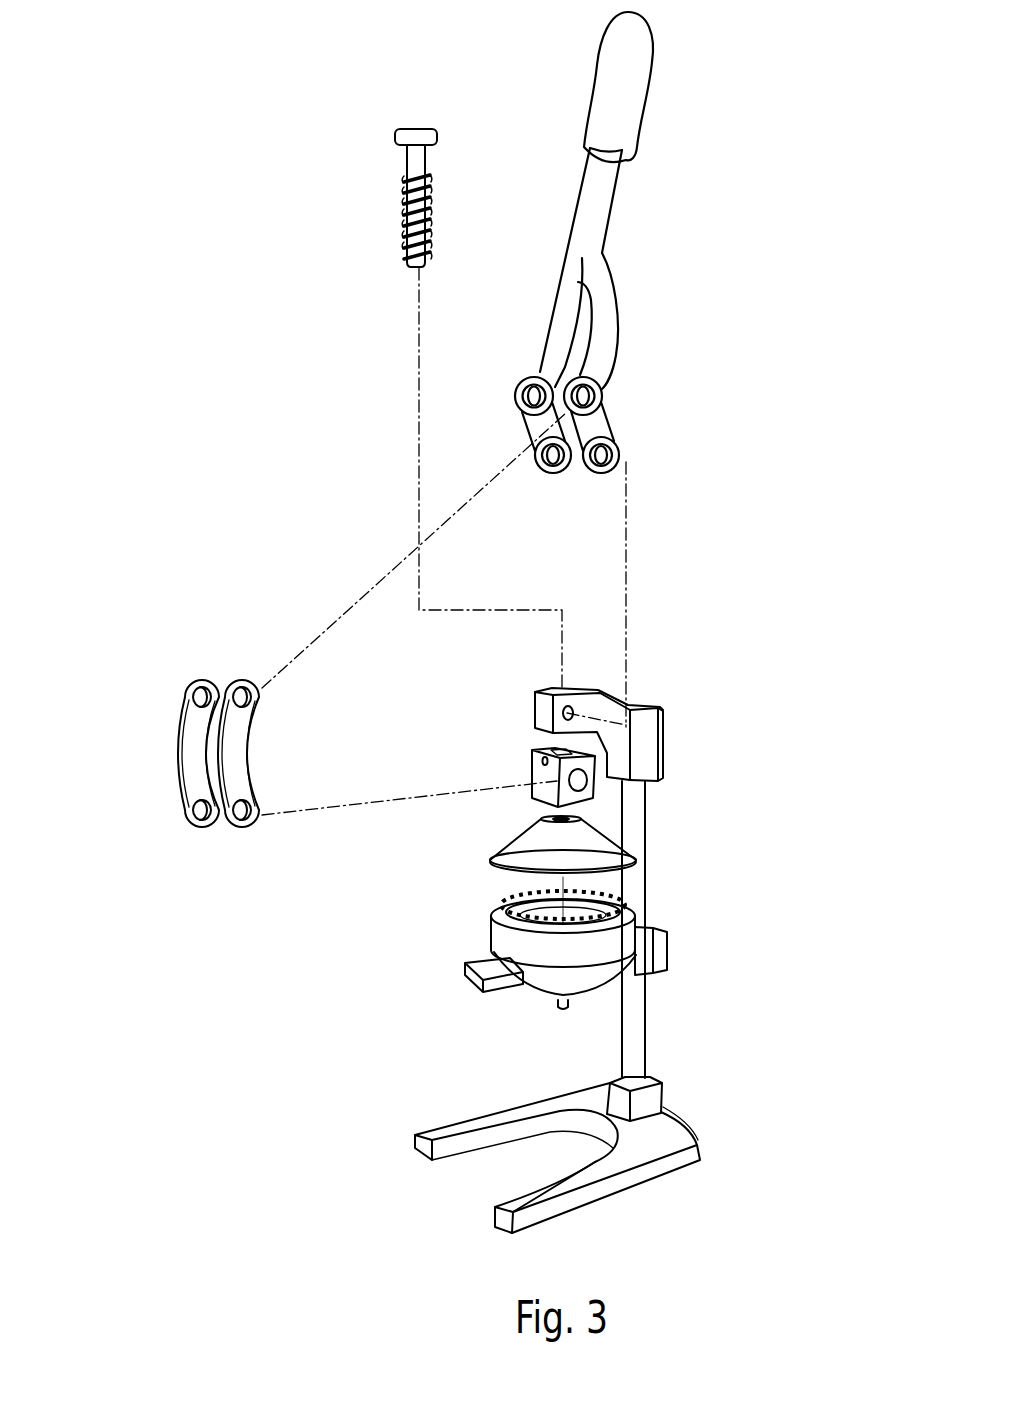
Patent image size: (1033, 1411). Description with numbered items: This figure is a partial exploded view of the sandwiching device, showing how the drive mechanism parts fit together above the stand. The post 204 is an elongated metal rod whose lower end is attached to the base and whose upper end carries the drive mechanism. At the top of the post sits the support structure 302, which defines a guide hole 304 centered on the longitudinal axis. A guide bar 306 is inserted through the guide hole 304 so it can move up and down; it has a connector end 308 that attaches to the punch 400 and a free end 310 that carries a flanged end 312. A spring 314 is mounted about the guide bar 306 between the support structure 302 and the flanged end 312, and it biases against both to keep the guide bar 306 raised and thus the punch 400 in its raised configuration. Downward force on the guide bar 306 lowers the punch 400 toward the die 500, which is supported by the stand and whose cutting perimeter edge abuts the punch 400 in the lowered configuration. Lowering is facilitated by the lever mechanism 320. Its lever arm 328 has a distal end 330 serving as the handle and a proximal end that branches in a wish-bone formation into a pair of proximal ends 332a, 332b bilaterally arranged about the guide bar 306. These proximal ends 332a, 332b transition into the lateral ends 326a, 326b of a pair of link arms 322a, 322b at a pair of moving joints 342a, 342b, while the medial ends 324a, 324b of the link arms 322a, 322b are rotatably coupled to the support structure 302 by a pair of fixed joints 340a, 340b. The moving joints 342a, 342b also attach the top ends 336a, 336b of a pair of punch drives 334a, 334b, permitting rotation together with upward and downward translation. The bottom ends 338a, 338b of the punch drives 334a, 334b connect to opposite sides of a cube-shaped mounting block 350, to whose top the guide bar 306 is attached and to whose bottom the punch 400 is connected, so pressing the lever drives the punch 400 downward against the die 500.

The free end 310 is at (362, 140).
The flanged end 312 is at (430, 134).
The guide bar 306 is at (405, 168).
The spring 314 is at (404, 218).
The connector end 308 is at (395, 278).
The distal end 330 is at (682, 93).
The lever mechanism 320 is at (627, 232).
The lever arm 328 is at (587, 218).
The proximal end 332a is at (633, 303).
The proximal end 332b is at (528, 360).
The lateral end 326a is at (607, 397).
The lateral end 326b is at (518, 410).
The moving joint 342a is at (600, 397).
The moving joint 342b is at (512, 388).
The link arm 322a is at (610, 416).
The link arm 322b is at (536, 432).
The fixed joint 340a is at (620, 456).
The fixed joint 340b is at (556, 470).
The medial end 324a is at (630, 470).
The medial end 324b is at (520, 480).
The punch drive 334a is at (240, 755).
The punch drive 334b is at (180, 745).
The top end 336a is at (256, 690).
The top end 336b is at (200, 674).
The bottom end 338a is at (258, 800).
The bottom end 338b is at (182, 815).
The guide hole 304 is at (560, 678).
The support structure 302 is at (541, 712).
The mounting block 350 is at (535, 770).
The punch 400 is at (530, 835).
The post 204 is at (645, 845).
The die 500 is at (500, 950).